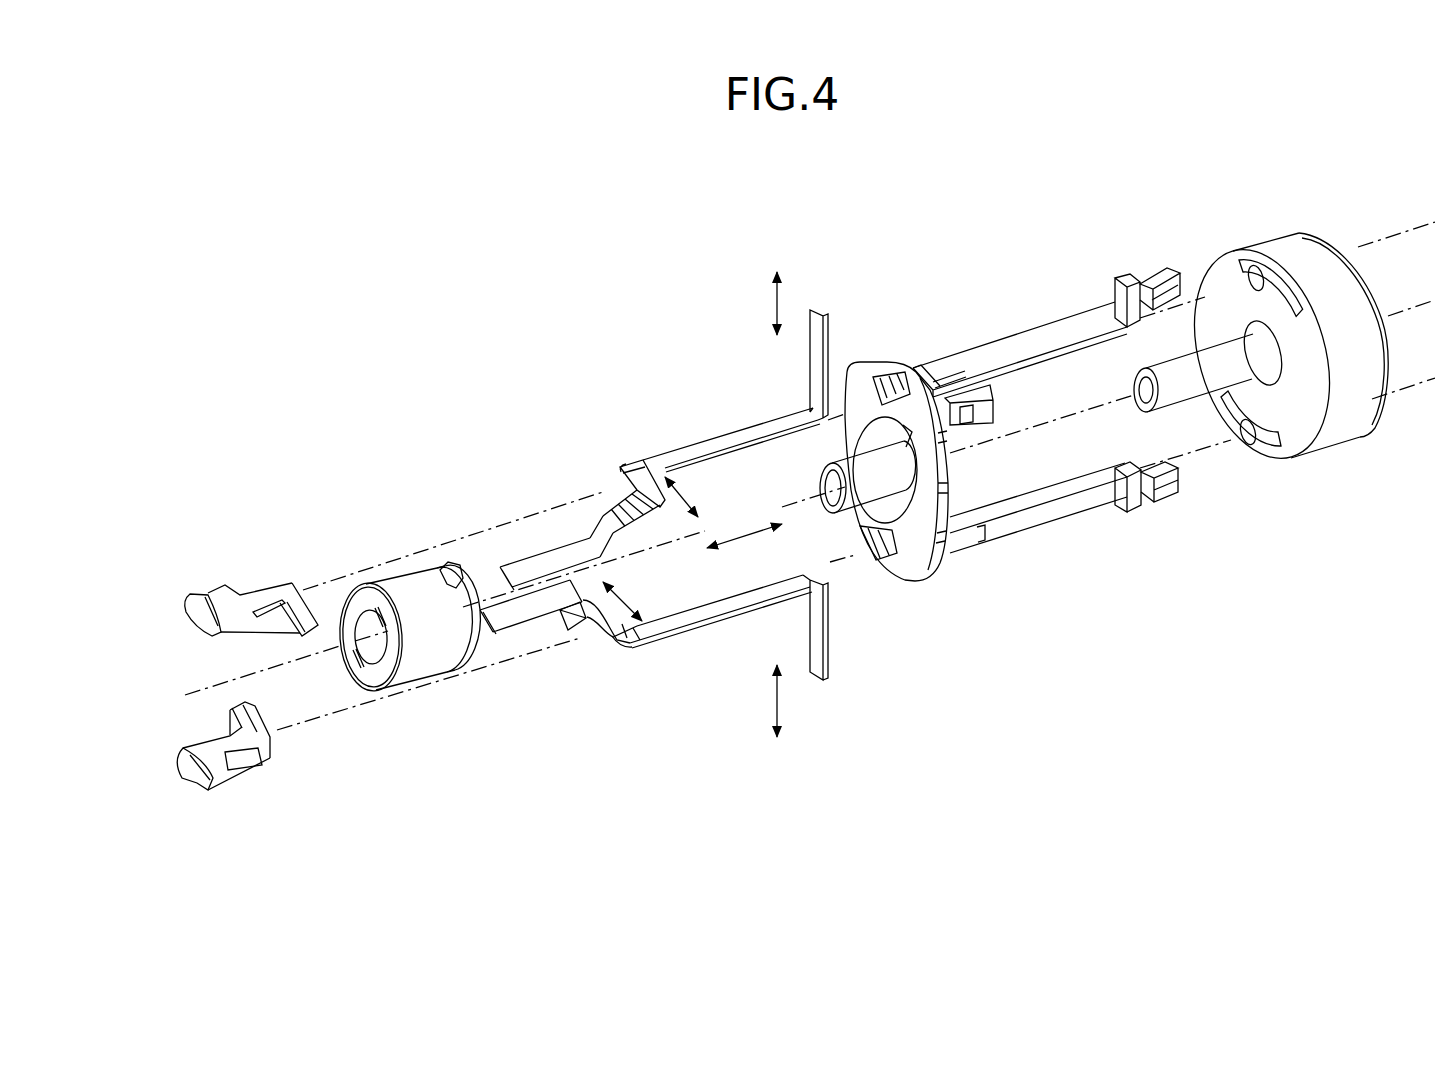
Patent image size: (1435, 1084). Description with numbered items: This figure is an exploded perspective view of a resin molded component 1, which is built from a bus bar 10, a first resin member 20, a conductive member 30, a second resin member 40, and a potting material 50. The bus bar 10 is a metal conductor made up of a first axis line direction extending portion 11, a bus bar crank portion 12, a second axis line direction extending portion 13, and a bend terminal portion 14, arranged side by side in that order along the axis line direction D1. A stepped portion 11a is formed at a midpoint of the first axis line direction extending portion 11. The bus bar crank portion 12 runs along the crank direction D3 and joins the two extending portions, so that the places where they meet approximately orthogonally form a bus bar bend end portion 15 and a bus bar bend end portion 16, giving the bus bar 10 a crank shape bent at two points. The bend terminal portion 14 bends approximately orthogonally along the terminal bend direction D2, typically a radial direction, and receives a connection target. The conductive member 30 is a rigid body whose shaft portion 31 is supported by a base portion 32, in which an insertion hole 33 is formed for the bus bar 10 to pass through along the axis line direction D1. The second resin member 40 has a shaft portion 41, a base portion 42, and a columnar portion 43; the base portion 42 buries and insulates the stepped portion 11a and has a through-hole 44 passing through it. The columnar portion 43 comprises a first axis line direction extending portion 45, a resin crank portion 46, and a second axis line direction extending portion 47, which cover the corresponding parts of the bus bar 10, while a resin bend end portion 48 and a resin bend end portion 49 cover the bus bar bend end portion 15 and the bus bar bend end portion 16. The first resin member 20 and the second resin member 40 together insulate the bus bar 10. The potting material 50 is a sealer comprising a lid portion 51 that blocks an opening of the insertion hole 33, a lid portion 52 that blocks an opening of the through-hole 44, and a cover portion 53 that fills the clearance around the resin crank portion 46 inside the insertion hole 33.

The resin molded component 1 is at (375, 277).
The bus bar 10 is at (590, 424).
The first axis line direction extending portion 11 is at (547, 563).
The stepped portion 11a is at (605, 530).
The bus bar crank portion 12 is at (645, 462).
The second axis line direction extending portion 13 is at (720, 440).
The bend terminal portion 14 is at (813, 357).
The bus bar bend end portion 15 is at (592, 585).
The bus bar bend end portion 16 is at (620, 456).
The first resin member 20 is at (390, 566).
The conductive member 30 is at (1292, 212).
The shaft portion 31 is at (1183, 375).
The base portion 32 is at (1310, 413).
The insertion hole 33 is at (1260, 293).
The second resin member 40 is at (958, 302).
The shaft portion 41 is at (860, 470).
The base portion 42 is at (910, 578).
The columnar portion 43 is at (1000, 327).
The through-hole 44 is at (887, 410).
The first axis line direction extending portion 45 is at (958, 403).
The resin crank portion 46 is at (957, 375).
The second axis line direction extending portion 47 is at (1057, 328).
The resin bend end portion 48 is at (998, 422).
The resin bend end portion 49 is at (933, 347).
The potting material 50 is at (218, 560).
The lid portion 51 is at (305, 602).
The lid portion 52 is at (210, 597).
The cover portion 53 is at (260, 595).
The axis line direction D1 is at (758, 532).
The terminal bend direction D2 is at (777, 295).
The crank direction D3 is at (690, 495).